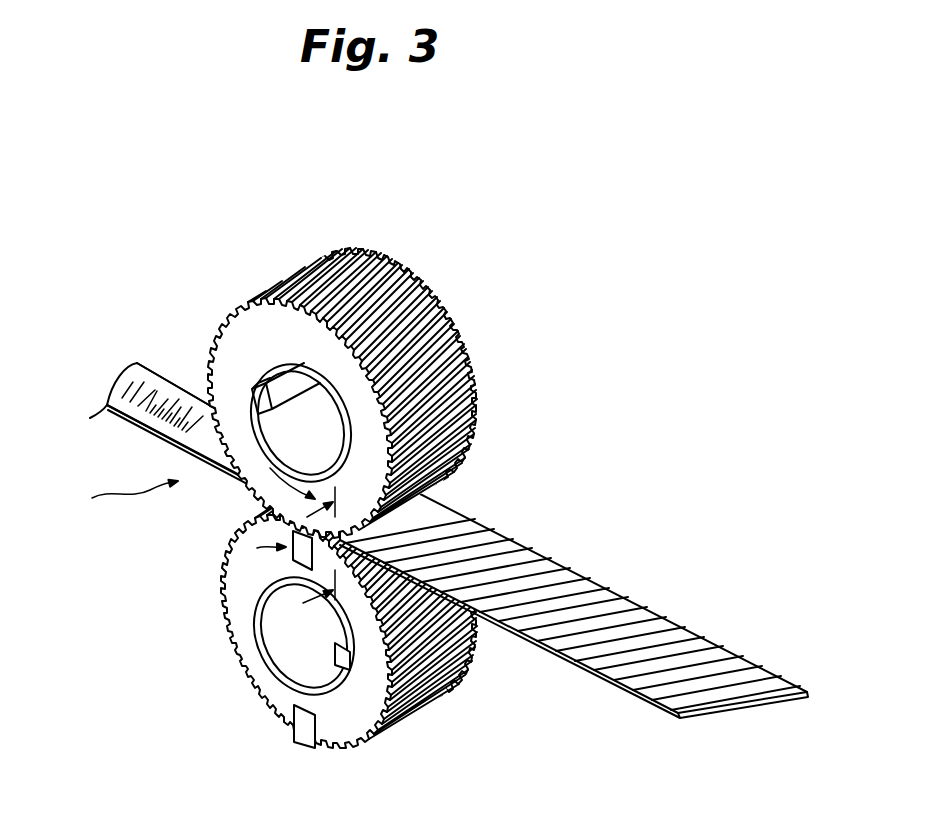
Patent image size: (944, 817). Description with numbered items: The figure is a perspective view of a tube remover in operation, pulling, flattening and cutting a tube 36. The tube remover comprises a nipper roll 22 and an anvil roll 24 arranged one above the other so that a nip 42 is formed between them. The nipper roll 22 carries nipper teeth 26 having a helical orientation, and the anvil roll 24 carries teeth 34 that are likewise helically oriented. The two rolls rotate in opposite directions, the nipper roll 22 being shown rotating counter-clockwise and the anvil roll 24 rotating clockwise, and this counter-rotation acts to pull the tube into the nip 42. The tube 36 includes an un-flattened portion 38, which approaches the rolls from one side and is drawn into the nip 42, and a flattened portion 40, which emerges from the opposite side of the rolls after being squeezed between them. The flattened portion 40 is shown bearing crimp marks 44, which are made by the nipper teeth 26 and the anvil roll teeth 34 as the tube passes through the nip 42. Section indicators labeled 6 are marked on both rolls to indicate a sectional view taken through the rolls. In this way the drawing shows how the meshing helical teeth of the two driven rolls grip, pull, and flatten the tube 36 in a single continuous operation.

The nipper roll 22 is at (350, 393).
The anvil roll 24 is at (343, 606).
The nipper teeth 26 is at (478, 427).
The teeth 34 is at (477, 653).
The tube 36 is at (119, 497).
The un-flattened portion 38 is at (149, 436).
The flattened portion 40 is at (574, 585).
The nip 42 is at (262, 500).
The crimp marks 44 is at (530, 562).
The section line for Fig. 6 is at (331, 544).